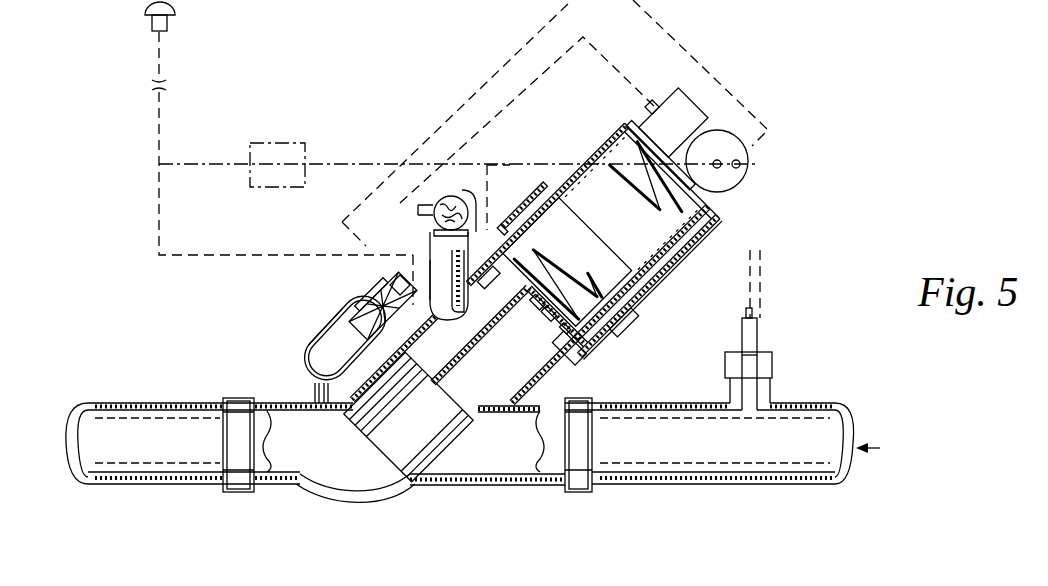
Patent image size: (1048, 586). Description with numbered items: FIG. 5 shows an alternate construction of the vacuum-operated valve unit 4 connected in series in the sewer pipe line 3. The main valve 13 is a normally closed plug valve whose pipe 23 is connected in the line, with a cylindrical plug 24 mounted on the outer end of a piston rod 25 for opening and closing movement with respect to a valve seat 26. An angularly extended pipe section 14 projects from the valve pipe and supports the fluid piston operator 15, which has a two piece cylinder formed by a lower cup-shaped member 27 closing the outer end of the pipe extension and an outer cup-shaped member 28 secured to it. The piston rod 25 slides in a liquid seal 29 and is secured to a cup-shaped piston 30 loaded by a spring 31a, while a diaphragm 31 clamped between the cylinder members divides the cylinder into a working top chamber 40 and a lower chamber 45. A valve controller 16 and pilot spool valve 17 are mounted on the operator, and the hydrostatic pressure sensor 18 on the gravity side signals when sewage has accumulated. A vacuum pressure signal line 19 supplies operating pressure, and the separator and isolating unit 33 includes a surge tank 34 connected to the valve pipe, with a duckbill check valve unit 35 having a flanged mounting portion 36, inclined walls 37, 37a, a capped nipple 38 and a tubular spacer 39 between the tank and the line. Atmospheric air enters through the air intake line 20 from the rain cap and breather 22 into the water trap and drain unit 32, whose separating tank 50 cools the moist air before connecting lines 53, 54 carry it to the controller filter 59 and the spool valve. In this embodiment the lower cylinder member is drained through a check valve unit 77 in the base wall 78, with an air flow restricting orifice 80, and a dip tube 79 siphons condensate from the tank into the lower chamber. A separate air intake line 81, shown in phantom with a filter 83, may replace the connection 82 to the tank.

The sewer pipe line 3 is at (156, 455).
The valve unit 4 is at (774, 114).
The main valve 13 is at (399, 492).
The pipe section 14 is at (530, 380).
The piston operator 15 is at (659, 281).
The valve controller 16 is at (669, 90).
The pilot spool valve 17 is at (748, 164).
The hydrostatic pressure sensor 18 is at (774, 366).
The vacuum pressure signal line 19 is at (447, 120).
The air intake line 20 is at (158, 118).
The rain cap and breather 22 is at (145, 13).
The pipe 23 is at (505, 488).
The cylindrical plug 24 is at (440, 447).
The piston rod 25 is at (457, 378).
The valve seat 26 is at (352, 425).
The lower cup-shaped member 27 is at (600, 336).
The outer cup-shaped member 28 is at (683, 253).
The sliding liquid seal 29 is at (538, 325).
The cup-shaped piston 30 is at (540, 213).
The diaphragm 31 is at (535, 215).
The spring 31a is at (657, 203).
The water trap and drain unit 32 is at (427, 275).
The pressure and material separator and isolating unit 33 is at (309, 341).
The surge tank 34 is at (347, 363).
The check valve unit 35 is at (353, 305).
The flanged cylindrical mounting portion 36 is at (380, 327).
The inclined wall 37 is at (363, 332).
The inclined wall 37a is at (345, 326).
The capped nipple 38 is at (350, 293).
The tubular spacer 39 is at (392, 312).
The working top chamber 40 is at (628, 242).
The lower chamber 45 is at (550, 342).
The separating tank 50 is at (427, 258).
The connecting line 53 is at (516, 104).
The connecting line 54 is at (538, 163).
The controller filter 59 is at (652, 98).
The check valve unit 77 is at (550, 353).
The base wall 78 is at (500, 290).
The dip tube 79 is at (428, 253).
The air flow restricting orifice 80 is at (583, 350).
The separate air intake line 81 is at (357, 158).
The connection 82 is at (474, 200).
The filter 83 is at (298, 143).